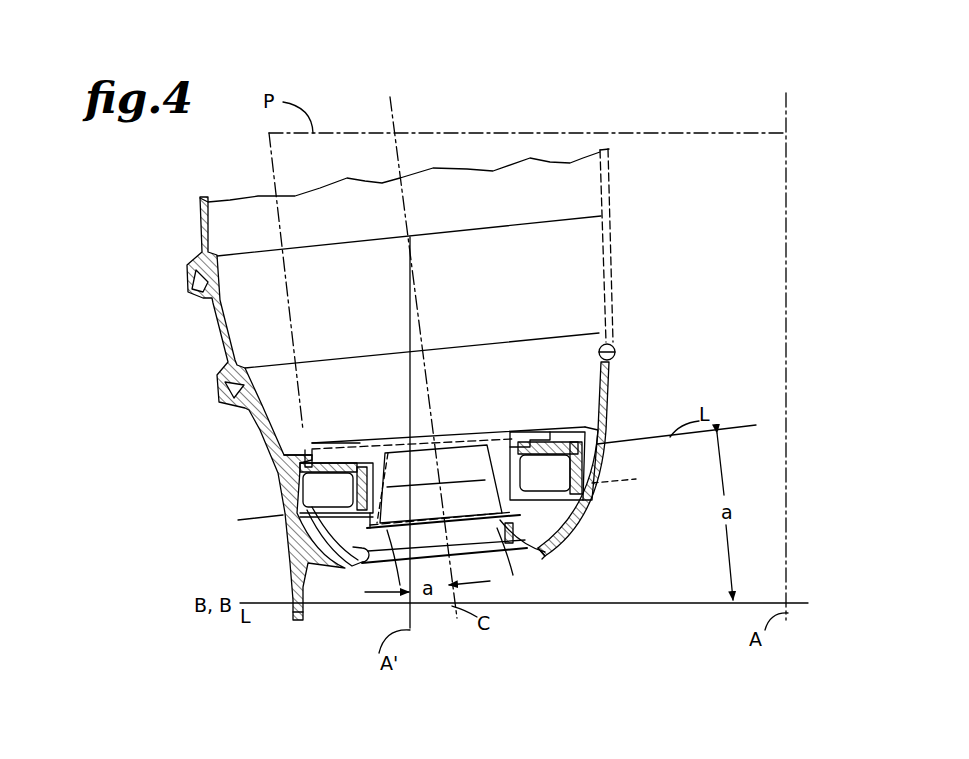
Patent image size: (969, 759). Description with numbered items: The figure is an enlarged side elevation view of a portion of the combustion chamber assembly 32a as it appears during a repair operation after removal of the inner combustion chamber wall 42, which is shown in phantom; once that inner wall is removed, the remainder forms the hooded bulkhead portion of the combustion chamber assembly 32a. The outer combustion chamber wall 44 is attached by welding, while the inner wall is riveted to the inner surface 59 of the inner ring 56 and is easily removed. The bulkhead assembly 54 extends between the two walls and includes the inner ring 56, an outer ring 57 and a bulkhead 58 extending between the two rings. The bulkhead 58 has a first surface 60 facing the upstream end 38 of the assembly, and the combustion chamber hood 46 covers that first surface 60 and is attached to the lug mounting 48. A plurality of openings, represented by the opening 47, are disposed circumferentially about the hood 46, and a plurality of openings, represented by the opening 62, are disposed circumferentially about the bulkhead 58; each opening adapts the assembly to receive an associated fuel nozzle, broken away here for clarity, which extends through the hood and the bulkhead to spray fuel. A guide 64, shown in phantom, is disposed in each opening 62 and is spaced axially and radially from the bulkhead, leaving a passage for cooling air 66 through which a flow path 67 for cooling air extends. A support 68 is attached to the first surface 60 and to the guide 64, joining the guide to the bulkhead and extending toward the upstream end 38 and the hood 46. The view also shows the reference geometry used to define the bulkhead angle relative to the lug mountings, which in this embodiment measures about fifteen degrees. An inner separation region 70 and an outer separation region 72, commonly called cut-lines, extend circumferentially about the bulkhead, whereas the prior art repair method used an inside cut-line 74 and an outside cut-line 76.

The combustion chamber assembly 32a is at (585, 95).
The inner combustion chamber wall 42 is at (612, 190).
The outer combustion chamber wall 44 is at (220, 313).
The inner surface 59 is at (602, 340).
The bulkhead 58 is at (523, 455).
The bulkhead assembly 54 is at (512, 448).
The inner ring 56 is at (586, 432).
The inner separation region 70 is at (558, 437).
The guide 64 is at (486, 441).
The outer separation region 72 is at (306, 467).
The flow path 67 is at (337, 443).
The outer ring 57 is at (272, 452).
The outside cut-line 76 is at (258, 519).
The passage for cooling air 66 is at (357, 496).
The opening 62 is at (396, 576).
The support 68 is at (500, 562).
The opening 47 is at (487, 543).
The first surface 60 is at (582, 512).
The combustion chamber hood 46 is at (562, 542).
The inside cut-line 74 is at (612, 481).
The upstream end 38 is at (560, 570).
The lug mounting 48 is at (297, 622).